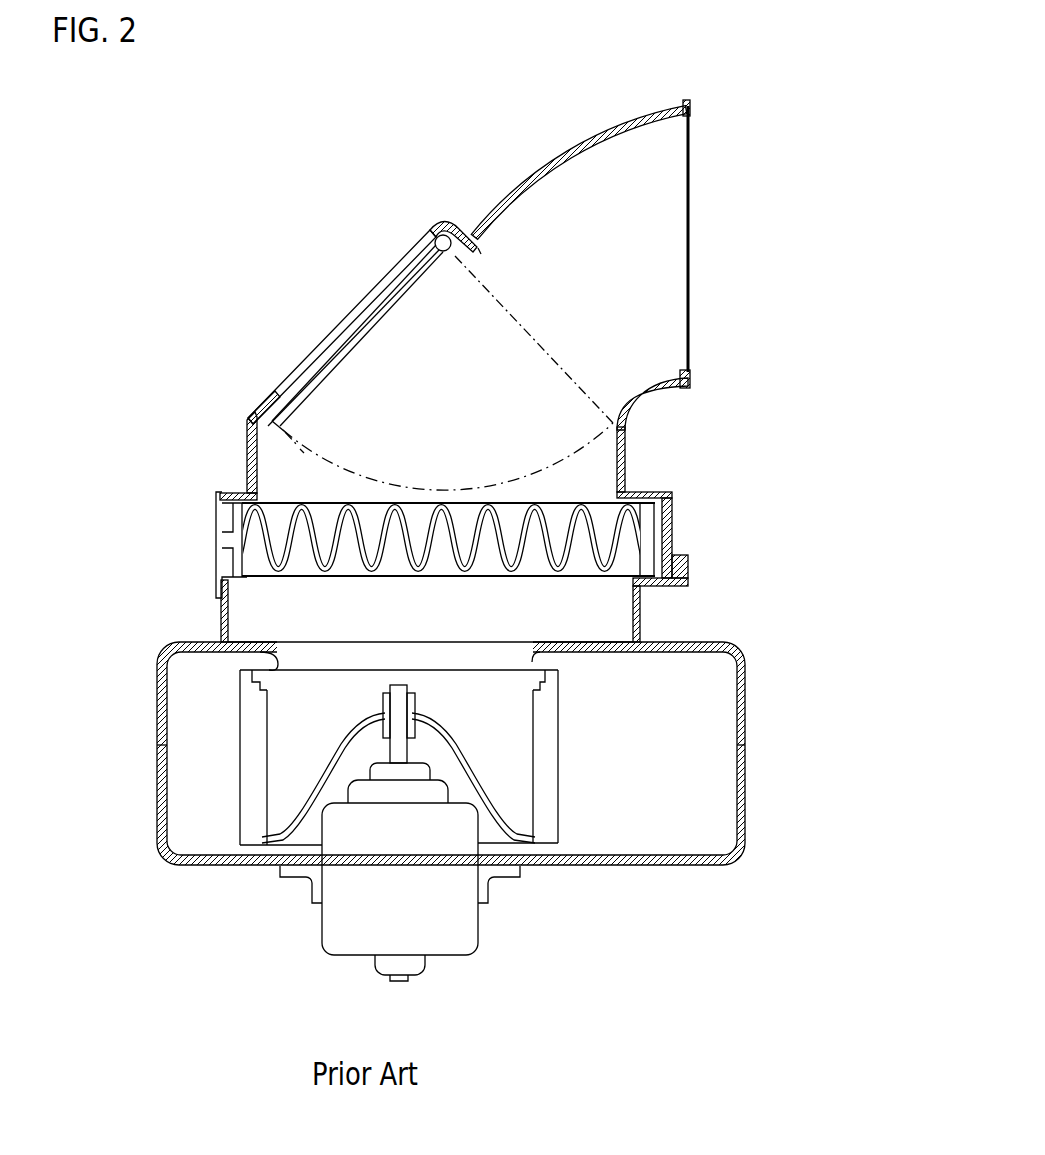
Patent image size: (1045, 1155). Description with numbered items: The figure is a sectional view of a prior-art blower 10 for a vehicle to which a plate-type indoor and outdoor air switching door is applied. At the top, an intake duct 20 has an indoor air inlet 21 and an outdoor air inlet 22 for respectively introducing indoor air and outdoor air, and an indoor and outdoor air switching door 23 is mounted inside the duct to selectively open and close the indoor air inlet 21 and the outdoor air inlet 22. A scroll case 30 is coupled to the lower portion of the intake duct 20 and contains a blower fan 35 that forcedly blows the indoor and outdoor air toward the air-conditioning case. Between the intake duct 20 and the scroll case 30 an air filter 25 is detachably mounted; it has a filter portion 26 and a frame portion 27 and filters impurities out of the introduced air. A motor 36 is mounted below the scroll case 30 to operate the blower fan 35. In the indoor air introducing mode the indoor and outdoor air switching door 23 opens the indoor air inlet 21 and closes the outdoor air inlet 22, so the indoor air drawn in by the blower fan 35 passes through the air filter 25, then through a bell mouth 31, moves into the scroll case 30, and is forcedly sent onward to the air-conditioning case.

The blower 10 is at (797, 483).
The intake duct 20 is at (622, 455).
The indoor air inlet 21 is at (356, 312).
The outdoor air inlet 22 is at (665, 228).
The indoor and outdoor air switching door 23 is at (321, 375).
The air filter 25 is at (365, 546).
The filter portion 26 is at (310, 537).
The frame portion 27 is at (235, 567).
The scroll case 30 is at (745, 690).
The bell mouth 31 is at (240, 683).
The blower fan 35 is at (548, 805).
The motor 36 is at (453, 928).